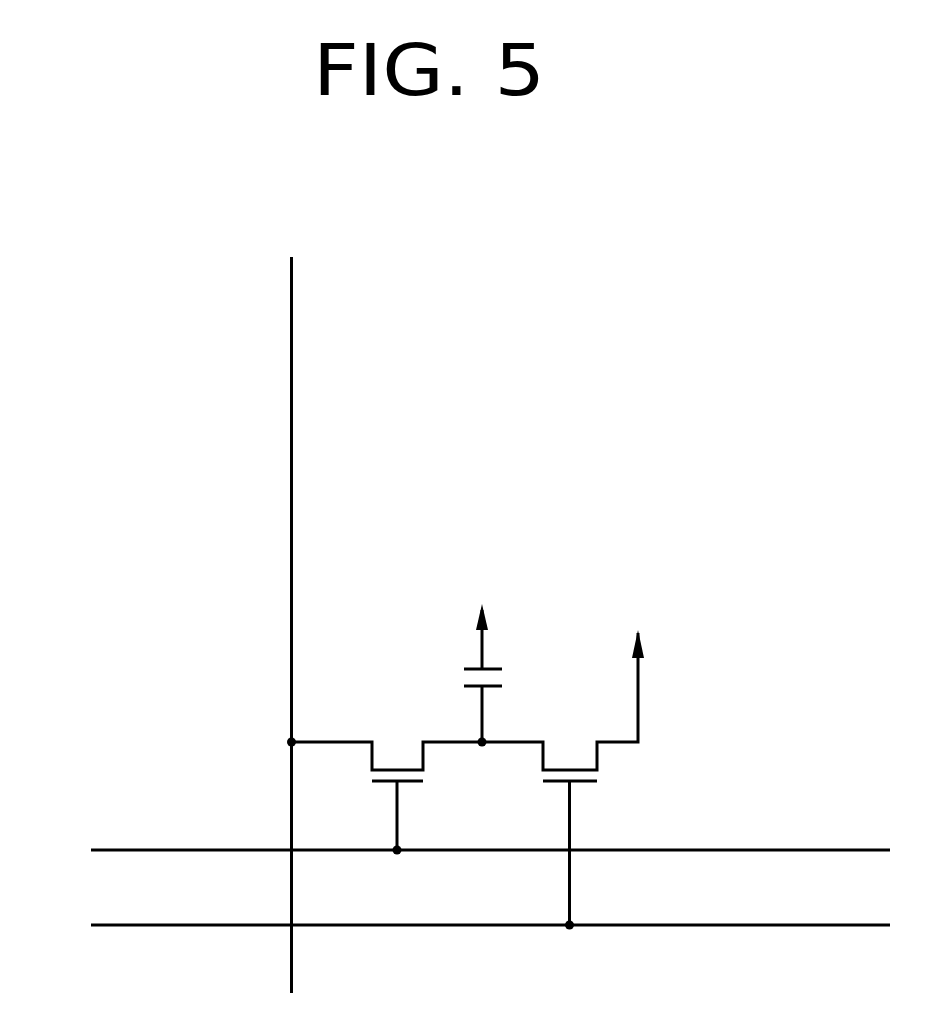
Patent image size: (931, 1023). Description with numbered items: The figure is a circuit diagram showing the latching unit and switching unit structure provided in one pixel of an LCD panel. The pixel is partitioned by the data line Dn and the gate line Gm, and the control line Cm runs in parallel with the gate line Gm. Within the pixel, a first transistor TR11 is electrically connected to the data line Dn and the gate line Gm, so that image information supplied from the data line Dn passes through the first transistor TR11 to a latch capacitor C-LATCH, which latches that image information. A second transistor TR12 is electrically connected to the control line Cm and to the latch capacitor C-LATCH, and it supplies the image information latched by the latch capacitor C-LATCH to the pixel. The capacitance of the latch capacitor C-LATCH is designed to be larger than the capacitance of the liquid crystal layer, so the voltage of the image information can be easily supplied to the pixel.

The data line Dn is at (291, 606).
The gate line Gm is at (460, 846).
The control line Cm is at (460, 923).
The first transistor TR11 is at (394, 777).
The second transistor TR12 is at (572, 814).
The latch capacitor C-LATCH is at (440, 673).